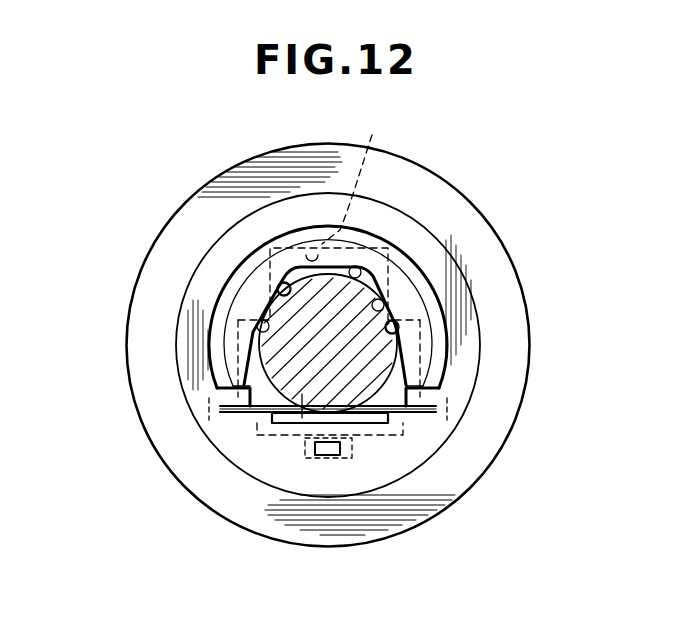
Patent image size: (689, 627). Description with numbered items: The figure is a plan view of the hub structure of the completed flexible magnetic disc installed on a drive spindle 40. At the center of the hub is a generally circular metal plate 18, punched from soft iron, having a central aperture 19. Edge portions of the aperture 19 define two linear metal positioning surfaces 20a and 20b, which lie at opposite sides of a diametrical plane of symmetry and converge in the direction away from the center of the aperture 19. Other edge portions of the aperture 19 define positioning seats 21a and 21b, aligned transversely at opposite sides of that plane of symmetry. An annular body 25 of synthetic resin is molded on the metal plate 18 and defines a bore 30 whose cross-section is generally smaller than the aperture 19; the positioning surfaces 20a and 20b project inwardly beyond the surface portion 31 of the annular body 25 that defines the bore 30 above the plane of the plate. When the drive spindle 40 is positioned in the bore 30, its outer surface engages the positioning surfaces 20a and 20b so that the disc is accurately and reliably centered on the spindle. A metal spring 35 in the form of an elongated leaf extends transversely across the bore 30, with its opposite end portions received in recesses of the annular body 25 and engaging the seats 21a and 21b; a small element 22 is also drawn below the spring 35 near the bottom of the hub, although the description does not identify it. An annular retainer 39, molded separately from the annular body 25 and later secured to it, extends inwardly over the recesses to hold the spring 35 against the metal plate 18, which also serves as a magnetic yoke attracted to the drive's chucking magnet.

The circular metal plate 18 is at (440, 357).
The central aperture 19 is at (348, 187).
The metal positioning surface 20a is at (280, 284).
The metal positioning surface 20b is at (396, 322).
The positioning seat 21a is at (228, 402).
The positioning seat 21b is at (428, 402).
The locking block 22 is at (326, 456).
The annular body 25 is at (440, 334).
The bore 30 is at (360, 268).
The surface portion 31 is at (386, 304).
The metal spring 35 is at (375, 416).
The annular retainer 39 is at (455, 482).
The drive spindle 40 is at (298, 398).